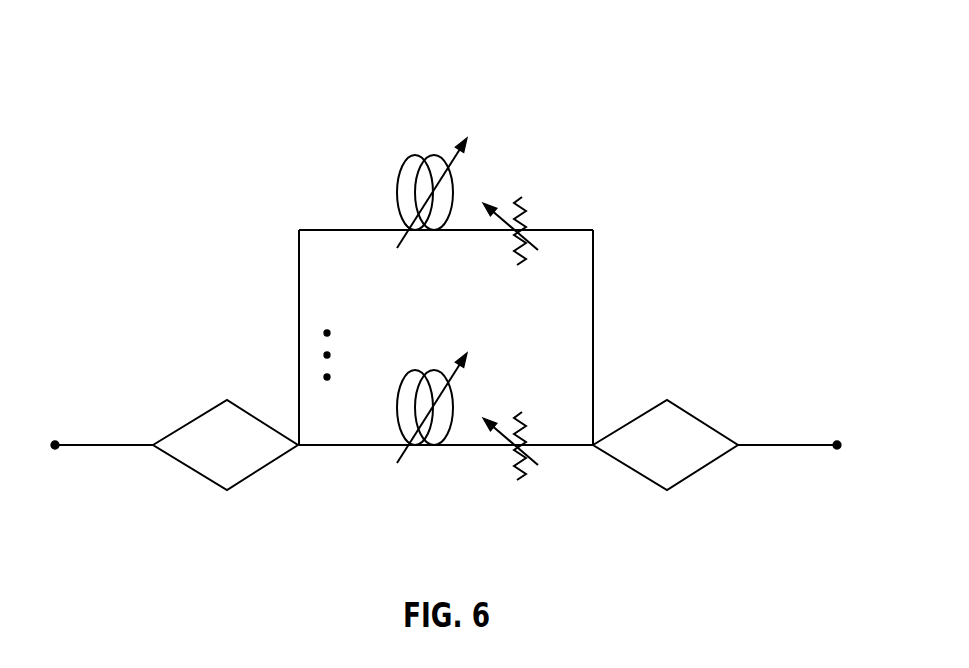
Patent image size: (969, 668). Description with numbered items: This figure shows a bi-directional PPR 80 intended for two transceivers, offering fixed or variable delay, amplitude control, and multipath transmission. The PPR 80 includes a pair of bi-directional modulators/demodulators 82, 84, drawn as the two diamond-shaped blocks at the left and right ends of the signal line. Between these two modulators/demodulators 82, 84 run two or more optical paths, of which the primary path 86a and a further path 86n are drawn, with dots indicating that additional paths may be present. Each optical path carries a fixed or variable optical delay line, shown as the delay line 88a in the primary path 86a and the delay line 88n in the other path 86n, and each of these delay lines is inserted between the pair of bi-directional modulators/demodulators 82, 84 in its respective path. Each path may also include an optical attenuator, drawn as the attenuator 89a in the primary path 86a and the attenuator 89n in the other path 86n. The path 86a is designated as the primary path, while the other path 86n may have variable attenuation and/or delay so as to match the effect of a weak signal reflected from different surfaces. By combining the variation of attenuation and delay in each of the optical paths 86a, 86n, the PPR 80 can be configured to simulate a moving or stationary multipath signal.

The bi-directional PPR 80 is at (690, 58).
The bi-directional modulator/demodulator 82 is at (227, 398).
The bi-directional modulator/demodulator 84 is at (667, 398).
The optical path 86n is at (343, 250).
The optical path 86a is at (343, 465).
The fixed or variable optical delay line 88n is at (416, 152).
The fixed or variable optical delay line 88a is at (416, 367).
The optical attenuator 89n is at (522, 197).
The optical attenuator 89a is at (522, 412).